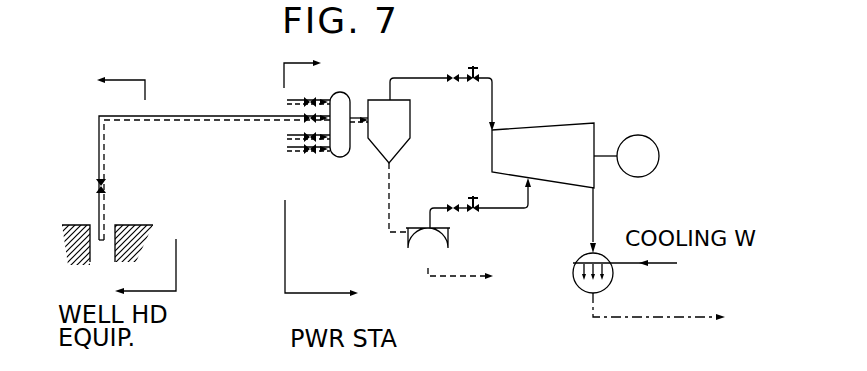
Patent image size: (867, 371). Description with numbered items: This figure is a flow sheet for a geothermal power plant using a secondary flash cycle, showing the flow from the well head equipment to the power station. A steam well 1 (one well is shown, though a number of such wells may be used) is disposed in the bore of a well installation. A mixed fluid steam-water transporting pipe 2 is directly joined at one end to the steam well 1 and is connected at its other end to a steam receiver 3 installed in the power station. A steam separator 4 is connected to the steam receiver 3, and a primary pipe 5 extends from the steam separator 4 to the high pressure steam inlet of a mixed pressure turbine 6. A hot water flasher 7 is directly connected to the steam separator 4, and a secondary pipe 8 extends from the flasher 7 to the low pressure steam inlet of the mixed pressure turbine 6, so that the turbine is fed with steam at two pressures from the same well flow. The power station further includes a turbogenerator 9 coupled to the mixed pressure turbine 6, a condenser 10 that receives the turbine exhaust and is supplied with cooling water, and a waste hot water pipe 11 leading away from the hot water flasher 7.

The steam well 1 is at (78, 223).
The mixed fluid steam-water transporting pipe 2 is at (183, 116).
The steam receiver 3 is at (340, 92).
The steam separator 4 is at (410, 115).
The primary pipe 5 is at (421, 78).
The mixed pressure turbine 6 is at (553, 128).
The hot water flasher 7 is at (408, 250).
The secondary pipe 8 is at (431, 206).
The turbogenerator 9 is at (650, 136).
The condenser 10 is at (614, 279).
The waste hot water pipe 11 is at (458, 276).